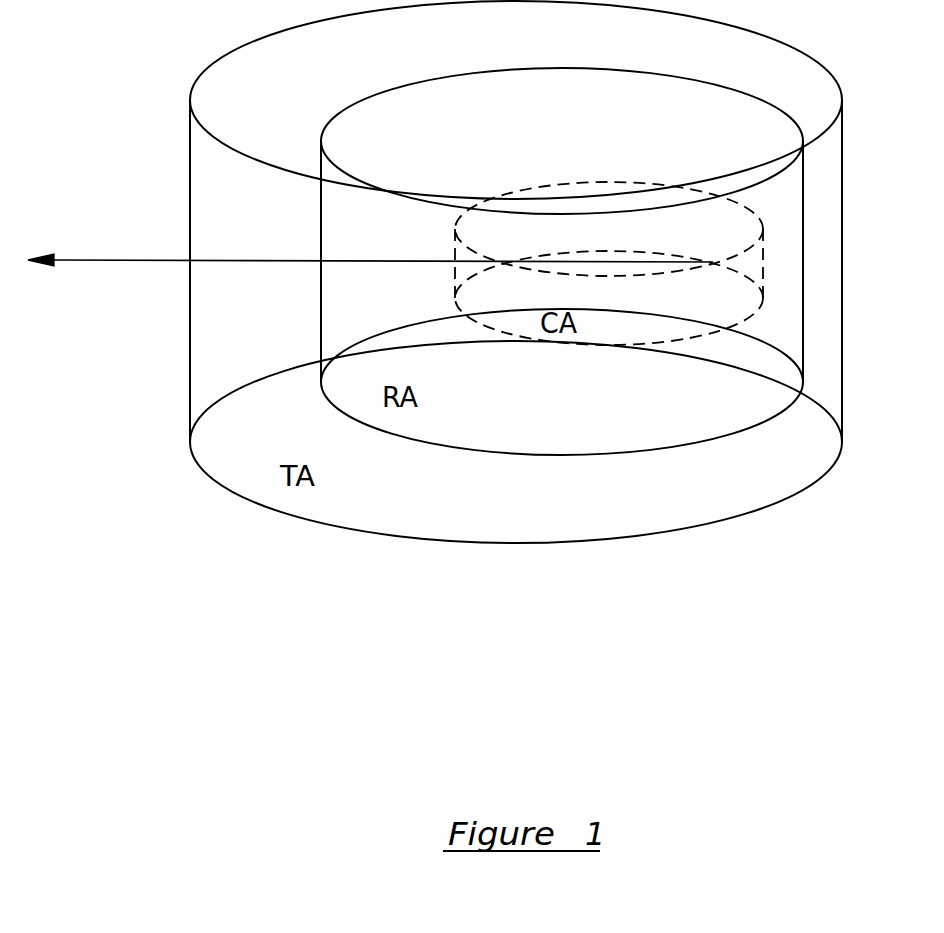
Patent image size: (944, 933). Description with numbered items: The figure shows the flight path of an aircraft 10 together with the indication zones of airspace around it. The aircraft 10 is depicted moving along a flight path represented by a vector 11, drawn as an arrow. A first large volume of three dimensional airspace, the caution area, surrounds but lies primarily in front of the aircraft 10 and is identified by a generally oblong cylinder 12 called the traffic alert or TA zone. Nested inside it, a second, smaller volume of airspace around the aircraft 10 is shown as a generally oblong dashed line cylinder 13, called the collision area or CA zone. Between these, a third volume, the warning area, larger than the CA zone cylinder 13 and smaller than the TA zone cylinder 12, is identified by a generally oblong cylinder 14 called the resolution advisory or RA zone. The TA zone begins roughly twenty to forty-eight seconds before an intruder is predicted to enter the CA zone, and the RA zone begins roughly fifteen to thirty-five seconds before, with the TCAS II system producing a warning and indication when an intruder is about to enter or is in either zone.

The aircraft 10 is at (712, 264).
The vector 11 is at (148, 253).
The traffic alert zone cylinder 12 is at (185, 147).
The collision area cylinder 13 is at (455, 253).
The resolution advisory zone cylinder 14 is at (320, 243).